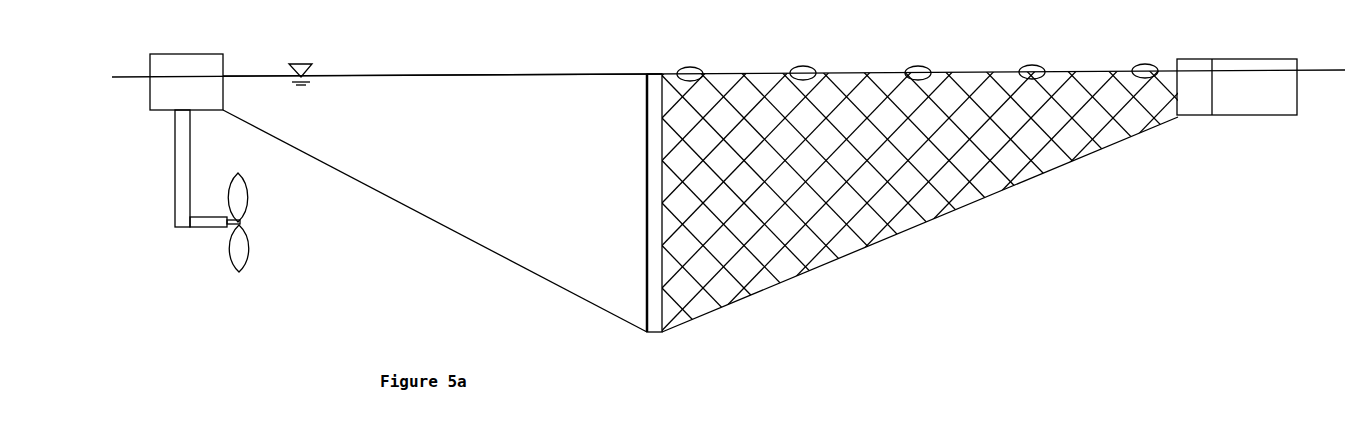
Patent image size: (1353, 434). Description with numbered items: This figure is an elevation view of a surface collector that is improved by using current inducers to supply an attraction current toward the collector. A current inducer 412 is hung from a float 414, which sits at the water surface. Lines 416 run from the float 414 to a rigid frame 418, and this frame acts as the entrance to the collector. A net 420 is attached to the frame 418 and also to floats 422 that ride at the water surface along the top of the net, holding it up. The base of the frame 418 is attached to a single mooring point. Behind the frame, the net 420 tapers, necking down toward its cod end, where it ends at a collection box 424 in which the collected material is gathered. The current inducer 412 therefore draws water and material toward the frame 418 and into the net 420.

The current inducer 412 is at (252, 237).
The float 414 is at (167, 50).
The lines 416 is at (466, 73).
The rigid frame 418 is at (652, 177).
The net 420 is at (888, 200).
The floats 422 is at (797, 62).
The collection box 424 is at (1222, 117).